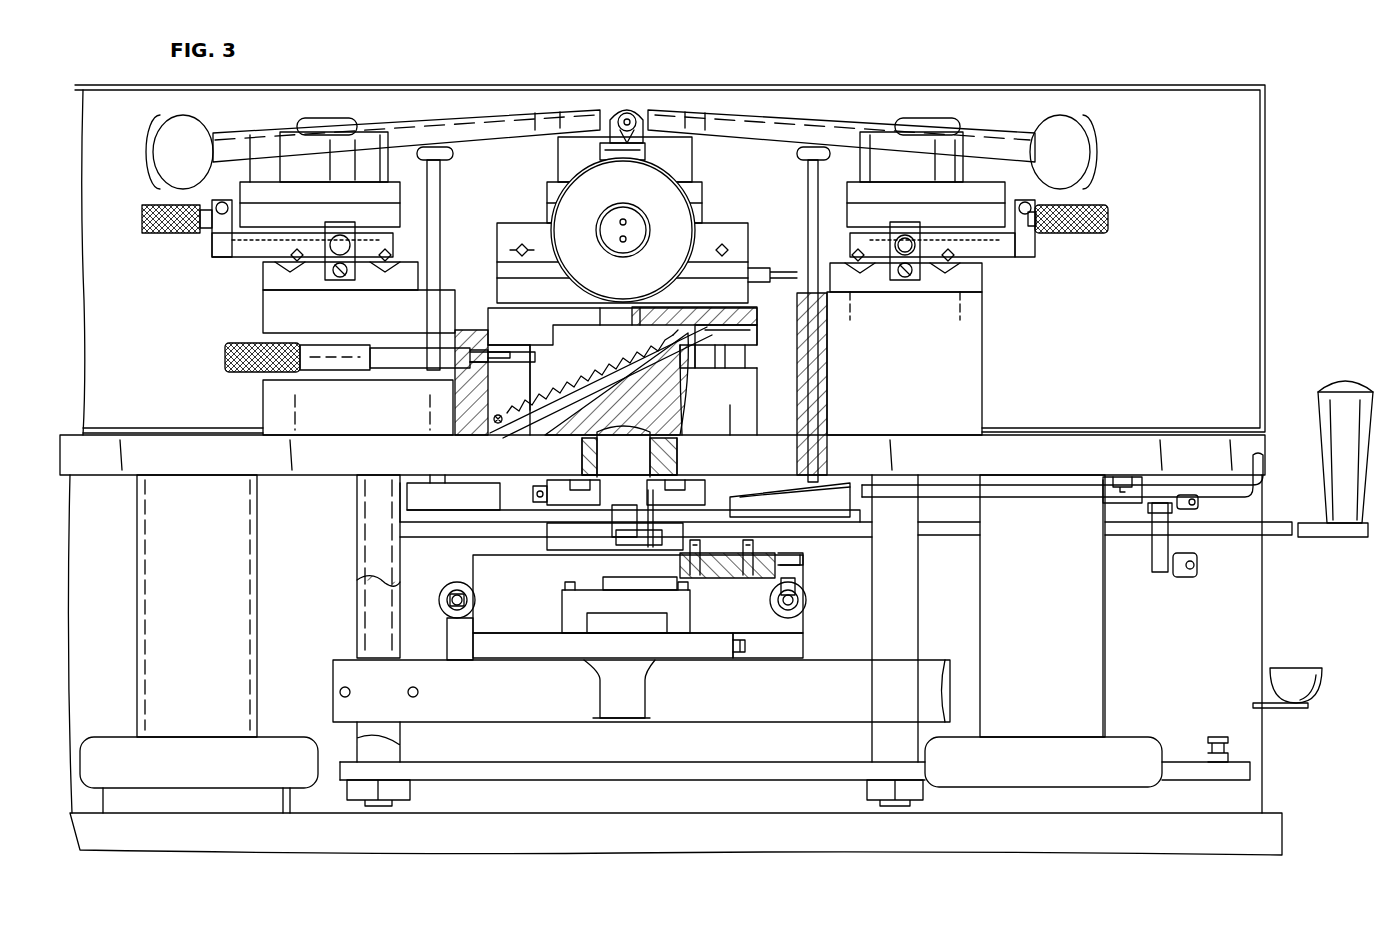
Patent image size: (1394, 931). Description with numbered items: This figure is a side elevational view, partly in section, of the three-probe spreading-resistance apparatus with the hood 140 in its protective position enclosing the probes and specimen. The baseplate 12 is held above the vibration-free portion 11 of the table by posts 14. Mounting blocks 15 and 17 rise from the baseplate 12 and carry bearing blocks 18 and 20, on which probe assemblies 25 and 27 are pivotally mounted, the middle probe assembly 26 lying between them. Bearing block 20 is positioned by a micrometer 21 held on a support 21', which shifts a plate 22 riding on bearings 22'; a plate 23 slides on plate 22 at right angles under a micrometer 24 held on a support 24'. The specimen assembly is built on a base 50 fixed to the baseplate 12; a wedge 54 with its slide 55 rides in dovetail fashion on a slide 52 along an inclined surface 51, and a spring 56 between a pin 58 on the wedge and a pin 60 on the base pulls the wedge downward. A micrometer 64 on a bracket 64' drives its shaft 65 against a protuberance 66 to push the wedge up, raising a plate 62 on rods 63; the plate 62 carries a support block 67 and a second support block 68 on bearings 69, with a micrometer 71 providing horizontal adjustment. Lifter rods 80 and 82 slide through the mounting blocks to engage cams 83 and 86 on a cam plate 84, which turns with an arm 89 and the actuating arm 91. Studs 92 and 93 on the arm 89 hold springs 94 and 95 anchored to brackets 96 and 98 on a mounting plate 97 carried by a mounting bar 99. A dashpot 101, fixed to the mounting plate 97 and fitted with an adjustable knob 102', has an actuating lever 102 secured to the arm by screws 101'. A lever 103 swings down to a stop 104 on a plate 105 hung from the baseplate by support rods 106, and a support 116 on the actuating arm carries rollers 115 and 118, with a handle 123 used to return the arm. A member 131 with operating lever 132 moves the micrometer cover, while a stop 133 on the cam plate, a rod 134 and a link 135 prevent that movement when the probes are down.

The vibration-free portion 11 is at (1283, 830).
The baseplate 12 is at (1046, 465).
The posts 14 is at (1108, 663).
The mounting block 15 is at (263, 392).
The mounting block 17 is at (958, 375).
The bearing block 18 is at (372, 135).
The bearing block 20 is at (872, 140).
The micrometer 21 is at (923, 240).
The support 21' is at (882, 239).
The plate 22 is at (945, 261).
The bearings 22' is at (962, 269).
The plate 23 is at (985, 210).
The micrometer 24 is at (1076, 204).
The support 24' is at (1056, 232).
The probe assembly 25 is at (450, 115).
The probe assembly 26 is at (630, 106).
The probe assembly 27 is at (790, 115).
The base 50 is at (720, 424).
The inclined surface 51 is at (613, 375).
The slide 52 is at (565, 400).
The wedge 54 is at (578, 368).
The slide 55 is at (730, 330).
The spring 56 is at (515, 418).
The pin 58 is at (688, 355).
The pin 60 is at (495, 425).
The plate 62 is at (745, 312).
The rods 63 is at (735, 360).
The micrometer 64 is at (369, 339).
The bracket 64' is at (319, 266).
The shaft 65 is at (495, 352).
The protuberance 66 is at (530, 378).
The support block 67 is at (742, 272).
The second support block 68 is at (740, 233).
The bearings 69 is at (510, 250).
The micrometer 71 is at (636, 222).
The lifter rod 80 is at (440, 200).
The lifter rod 82 is at (800, 192).
The cam 83 is at (470, 506).
The cam plate 84 is at (445, 525).
The cam 86 is at (828, 483).
The arm 89 is at (810, 572).
The actuating arm 91 is at (1215, 538).
The stud 92 is at (447, 586).
The stud 93 is at (800, 590).
The spring 94 is at (470, 596).
The spring 95 is at (770, 606).
The bracket 96 is at (447, 641).
The mounting plate 97 is at (698, 655).
The bracket 98 is at (798, 645).
The mounting bar 99 is at (520, 699).
The dashpot 101 is at (638, 594).
The screws 101' is at (813, 550).
The actuating lever 102 is at (727, 578).
The adjustable knob 102' is at (595, 690).
The lever 103 is at (1280, 710).
The stop 104 is at (1215, 736).
The plate 105 is at (545, 784).
The support rods 106 is at (358, 530).
The roller 115 is at (1180, 580).
The support 116 is at (1152, 560).
The roller 118 is at (1200, 506).
The handle 123 is at (1327, 398).
The member 131 is at (640, 456).
The operating lever 132 is at (1264, 488).
The stop 133 is at (547, 539).
The rod 134 is at (628, 545).
The link 135 is at (652, 510).
The hood 140 is at (1268, 258).